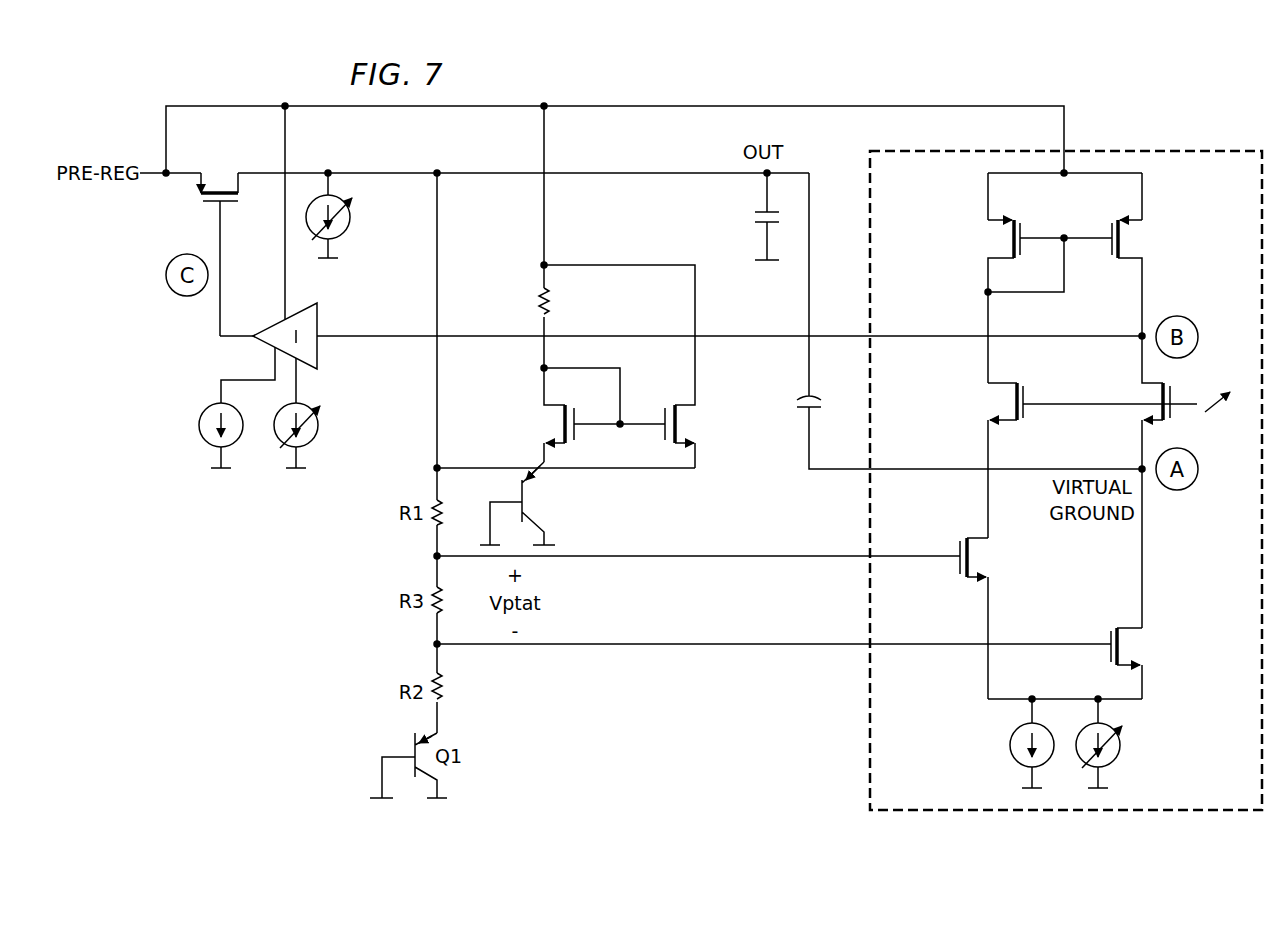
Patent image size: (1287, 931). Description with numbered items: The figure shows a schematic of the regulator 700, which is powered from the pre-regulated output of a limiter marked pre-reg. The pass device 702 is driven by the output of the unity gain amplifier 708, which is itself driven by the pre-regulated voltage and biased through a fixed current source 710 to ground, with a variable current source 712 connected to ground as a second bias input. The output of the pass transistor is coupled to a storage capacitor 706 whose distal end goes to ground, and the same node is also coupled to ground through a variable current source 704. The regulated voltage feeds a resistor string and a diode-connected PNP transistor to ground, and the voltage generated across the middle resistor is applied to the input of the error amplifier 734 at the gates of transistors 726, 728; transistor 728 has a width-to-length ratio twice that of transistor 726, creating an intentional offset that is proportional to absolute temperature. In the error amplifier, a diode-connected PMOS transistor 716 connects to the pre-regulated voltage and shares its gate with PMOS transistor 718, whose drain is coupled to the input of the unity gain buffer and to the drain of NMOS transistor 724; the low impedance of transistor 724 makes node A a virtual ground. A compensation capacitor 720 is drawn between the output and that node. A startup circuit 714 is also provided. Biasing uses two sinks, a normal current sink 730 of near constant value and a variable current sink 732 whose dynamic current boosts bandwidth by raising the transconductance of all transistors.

The regulator 700 is at (270, 556).
The pass device 702 is at (230, 205).
The variable current source 704 is at (348, 238).
The storage capacitor 706 is at (751, 217).
The unity gain amplifier 708 is at (330, 350).
The fixed current source 710 is at (200, 436).
The variable current source 712 is at (316, 438).
The startup circuit 714 is at (607, 254).
The diode-connected PMOS transistor 716 is at (1022, 225).
The PMOS transistor 718 is at (1112, 252).
The compensation capacitor 720 is at (796, 402).
The NMOS transistor 724 is at (1176, 385).
The transistor 726 is at (955, 570).
The transistor 728 is at (1108, 635).
The normal current sink 730 is at (1012, 758).
The variable current sink 732 is at (1120, 759).
The error amplifier 734 is at (1119, 149).